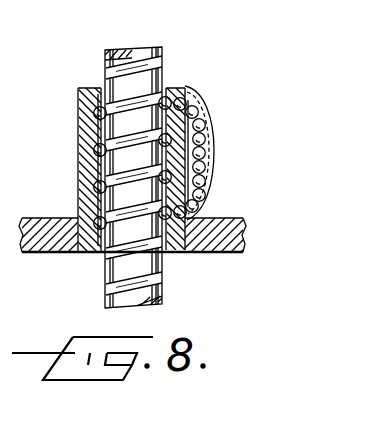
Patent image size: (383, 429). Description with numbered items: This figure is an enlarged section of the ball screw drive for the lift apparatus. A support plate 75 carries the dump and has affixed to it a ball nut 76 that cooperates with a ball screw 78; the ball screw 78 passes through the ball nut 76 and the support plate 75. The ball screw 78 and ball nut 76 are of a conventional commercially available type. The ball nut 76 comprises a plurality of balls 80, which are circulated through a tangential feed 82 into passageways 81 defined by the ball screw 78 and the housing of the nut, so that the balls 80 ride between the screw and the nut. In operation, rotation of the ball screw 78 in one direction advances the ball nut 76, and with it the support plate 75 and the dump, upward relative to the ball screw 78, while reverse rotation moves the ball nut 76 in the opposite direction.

The support plate 75 is at (60, 253).
The ball nut 76 is at (80, 167).
The ball screw 78 is at (135, 175).
The balls 80 is at (205, 166).
The passageways 81 is at (128, 107).
The tangential feed 82 is at (203, 108).